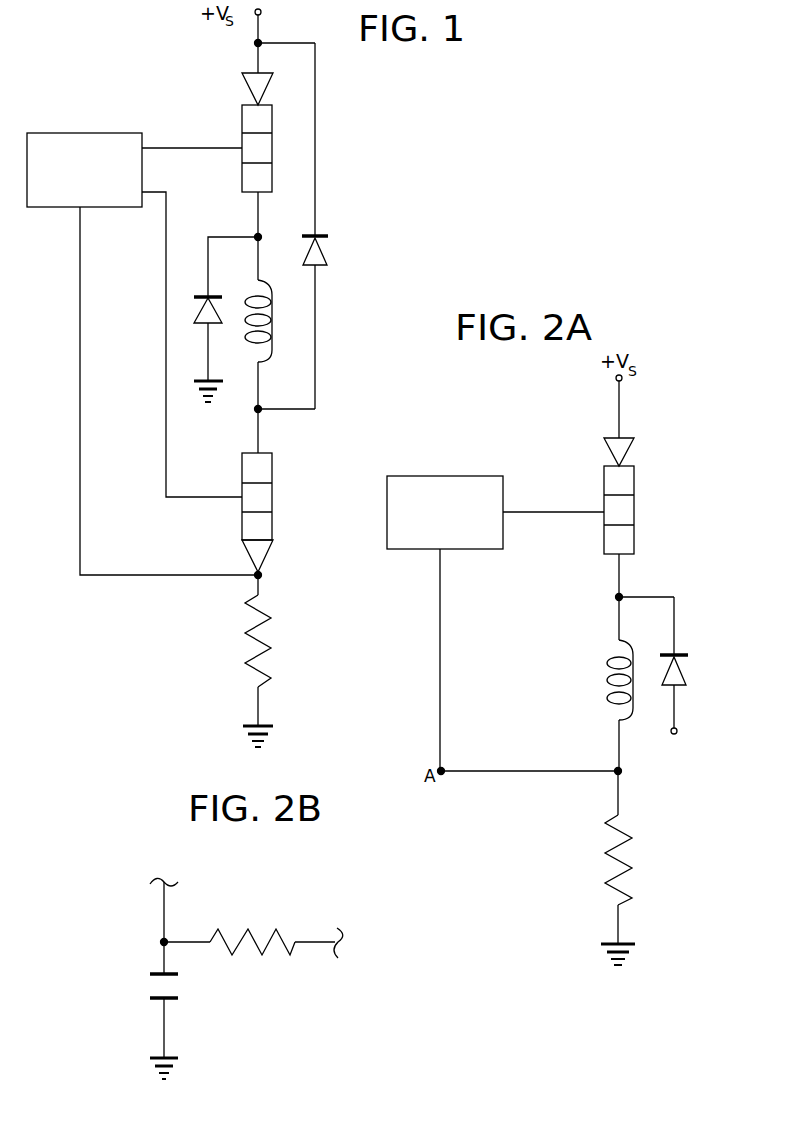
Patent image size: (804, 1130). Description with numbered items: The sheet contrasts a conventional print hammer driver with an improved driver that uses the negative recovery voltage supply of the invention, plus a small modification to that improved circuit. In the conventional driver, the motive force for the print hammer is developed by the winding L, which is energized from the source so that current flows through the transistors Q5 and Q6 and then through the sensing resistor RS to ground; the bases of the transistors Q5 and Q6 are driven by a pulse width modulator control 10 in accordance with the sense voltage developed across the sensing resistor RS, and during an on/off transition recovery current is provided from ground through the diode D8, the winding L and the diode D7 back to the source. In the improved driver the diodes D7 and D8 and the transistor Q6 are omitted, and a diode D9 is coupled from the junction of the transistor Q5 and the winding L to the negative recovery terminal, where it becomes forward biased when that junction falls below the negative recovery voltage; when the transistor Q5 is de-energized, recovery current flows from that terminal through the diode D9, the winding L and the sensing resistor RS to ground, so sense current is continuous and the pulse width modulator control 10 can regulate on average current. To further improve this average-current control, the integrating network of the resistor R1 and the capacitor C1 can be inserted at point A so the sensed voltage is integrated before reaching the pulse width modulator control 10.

In FIG. 1, the pulse width modulator control 10 is at (108, 133).
In FIG. 2A, the pulse width modulator control 10 is at (470, 476).
In FIG. 1, the transistor Q5 is at (272, 152).
In FIG. 2A, the transistor Q5 is at (634, 522).
In FIG. 1, the transistor Q6 is at (272, 527).
In FIG. 1, the diode D7 is at (325, 258).
In FIG. 1, the diode D8 is at (196, 312).
In FIG. 2A, the diode D9 is at (688, 670).
In FIG. 1, the winding L is at (270, 338).
In FIG. 2A, the winding L is at (605, 685).
In FIG. 1, the sensing resistor RS is at (268, 650).
In FIG. 2A, the sensing resistor RS is at (630, 865).
In FIG. 2B, the resistor R1 is at (248, 930).
In FIG. 2B, the capacitor C1 is at (150, 986).